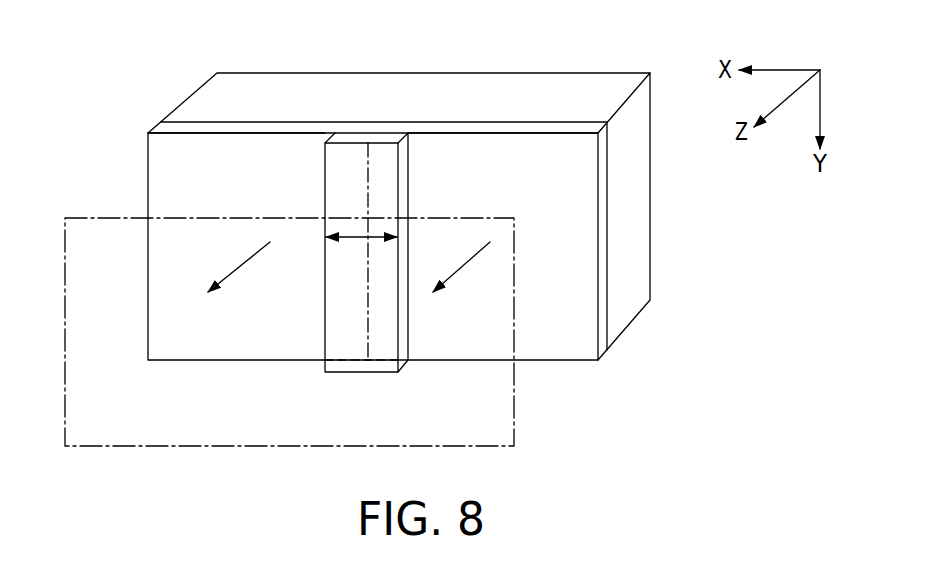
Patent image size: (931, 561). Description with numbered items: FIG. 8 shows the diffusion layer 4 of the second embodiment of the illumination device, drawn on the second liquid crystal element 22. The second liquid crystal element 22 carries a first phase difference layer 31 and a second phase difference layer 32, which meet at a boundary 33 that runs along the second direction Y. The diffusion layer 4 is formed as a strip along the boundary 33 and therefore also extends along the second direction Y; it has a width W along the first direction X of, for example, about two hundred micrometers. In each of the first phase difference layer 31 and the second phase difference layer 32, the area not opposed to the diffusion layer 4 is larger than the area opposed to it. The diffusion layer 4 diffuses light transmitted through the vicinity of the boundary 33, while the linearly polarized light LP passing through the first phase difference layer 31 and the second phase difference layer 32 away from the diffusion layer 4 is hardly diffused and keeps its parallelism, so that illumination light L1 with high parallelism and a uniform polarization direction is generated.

The second liquid crystal element 22 is at (612, 72).
The second phase difference layer 32 is at (252, 128).
The first phase difference layer 31 is at (503, 125).
The diffusion layer 4 is at (400, 172).
The boundary 33 is at (368, 162).
The width W is at (357, 237).
The linearly polarized light LP is at (243, 263).
The illumination light L1 is at (514, 414).